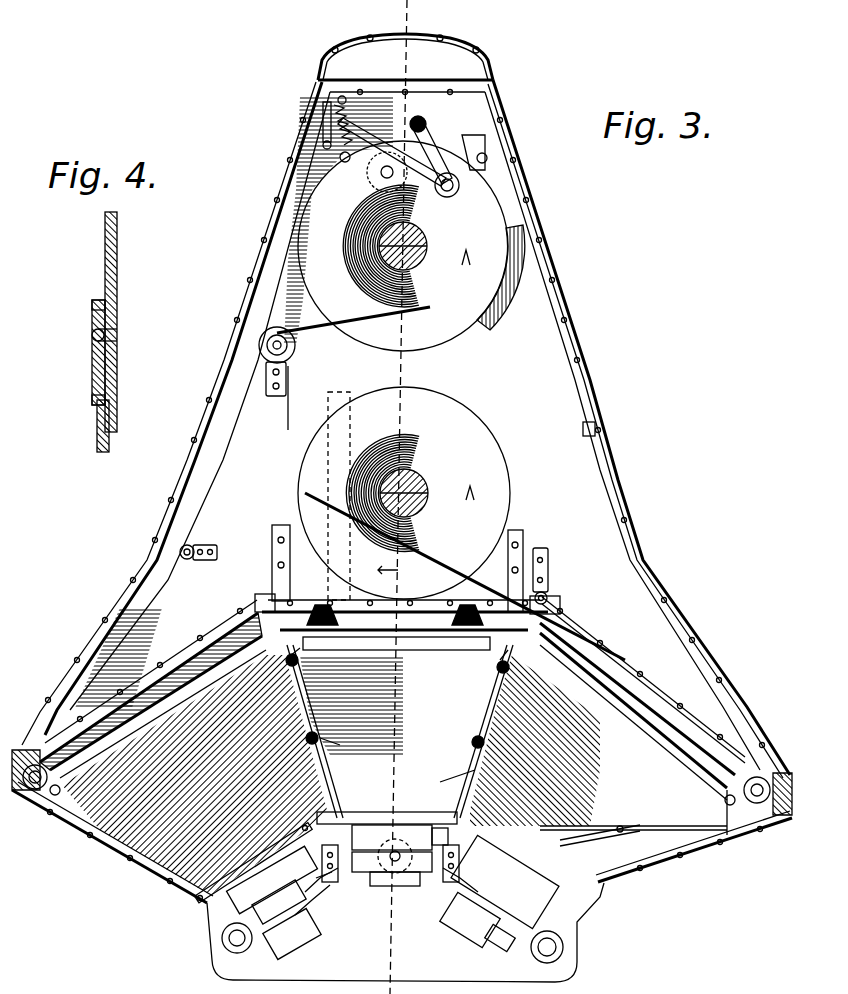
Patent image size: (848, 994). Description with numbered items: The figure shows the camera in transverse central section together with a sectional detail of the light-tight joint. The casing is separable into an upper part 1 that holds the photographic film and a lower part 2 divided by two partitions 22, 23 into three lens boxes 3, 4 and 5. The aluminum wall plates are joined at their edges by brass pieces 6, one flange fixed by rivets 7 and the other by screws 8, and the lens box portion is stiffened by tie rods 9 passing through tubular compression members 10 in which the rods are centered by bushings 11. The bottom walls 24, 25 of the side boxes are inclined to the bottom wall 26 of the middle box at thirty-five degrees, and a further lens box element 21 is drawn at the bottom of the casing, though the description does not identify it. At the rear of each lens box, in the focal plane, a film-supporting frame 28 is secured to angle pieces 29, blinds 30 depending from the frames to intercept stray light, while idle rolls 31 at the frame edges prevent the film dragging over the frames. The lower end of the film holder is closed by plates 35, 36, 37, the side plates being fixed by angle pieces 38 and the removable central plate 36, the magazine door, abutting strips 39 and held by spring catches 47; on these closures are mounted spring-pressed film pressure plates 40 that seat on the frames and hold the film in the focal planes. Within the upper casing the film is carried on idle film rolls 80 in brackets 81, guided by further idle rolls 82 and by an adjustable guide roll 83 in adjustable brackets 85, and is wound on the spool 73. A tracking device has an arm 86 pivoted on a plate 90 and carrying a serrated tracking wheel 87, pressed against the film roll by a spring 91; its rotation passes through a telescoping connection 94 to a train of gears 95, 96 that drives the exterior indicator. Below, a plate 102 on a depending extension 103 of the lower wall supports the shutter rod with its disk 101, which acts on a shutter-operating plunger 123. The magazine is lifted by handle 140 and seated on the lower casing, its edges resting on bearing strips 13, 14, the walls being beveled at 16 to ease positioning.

In FIG. 3, the handle 140 is at (452, 43).
In FIG. 3, the rivets 7 is at (230, 318).
In FIG. 3, the upper part of casing 1 is at (558, 275).
In FIG. 4, the upper part of casing 1 is at (104, 243).
In FIG. 3, the brass pieces 6 is at (222, 452).
In FIG. 3, the screws 8 is at (583, 430).
In FIG. 3, the film spool 73 is at (440, 228).
In FIG. 3, the bushings 11 is at (405, 592).
In FIG. 3, the adjustable guide roll 83 is at (296, 350).
In FIG. 3, the adjustable brackets 85 is at (287, 385).
In FIG. 3, the spring 91 is at (330, 117).
In FIG. 3, the metal plate 90 is at (320, 133).
In FIG. 3, the arm 86 is at (376, 160).
In FIG. 3, the gear 96 is at (380, 190).
In FIG. 3, the gear 95 is at (428, 118).
In FIG. 3, the telescoping connection 94 is at (440, 145).
In FIG. 3, the tracking wheel 87 is at (458, 194).
In FIG. 3, the spring catches 47 is at (282, 525).
In FIG. 3, the brackets 81 is at (218, 548).
In FIG. 3, the idle film rolls 80 is at (190, 544).
In FIG. 3, the angle pieces 38 is at (178, 655).
In FIG. 3, the central plate 36 is at (300, 610).
In FIG. 3, the strips 39 is at (262, 594).
In FIG. 3, the side plate closure 35 is at (128, 695).
In FIG. 3, the film-supporting frame 28 is at (238, 662).
In FIG. 3, the side plate closure 37 is at (680, 705).
In FIG. 3, the angle pieces 29 is at (183, 712).
In FIG. 3, the blinds 30 is at (268, 685).
In FIG. 3, the film pressure plates 40 is at (145, 735).
In FIG. 3, the idle rolls 31 is at (300, 665).
In FIG. 3, the lens box 4 is at (400, 731).
In FIG. 3, the tie rods 9 is at (308, 745).
In FIG. 3, the tubular compression members 10 is at (339, 749).
In FIG. 3, the partition 22 is at (292, 742).
In FIG. 3, the partition 23 is at (447, 776).
In FIG. 3, the bottom wall 24 is at (300, 826).
In FIG. 3, the bottom wall 26 is at (350, 812).
In FIG. 3, the disk 101 is at (395, 890).
In FIG. 3, the plate 102 is at (355, 880).
In FIG. 3, the shutter-operating plunger 123 is at (322, 905).
In FIG. 3, the cylinder 21 is at (499, 893).
In FIG. 3, the bottom wall 25 is at (580, 850).
In FIG. 3, the lens box 3 is at (232, 790).
In FIG. 3, the lens box 5 is at (570, 796).
In FIG. 3, the lower part of casing 2 is at (698, 862).
In FIG. 4, the lower part of casing 2 is at (97, 440).
In FIG. 3, the depending extension 103 is at (565, 955).
In FIG. 3, the idle rolls 82 is at (25, 790).
In FIG. 4, the bearing strip 14 is at (98, 300).
In FIG. 4, the beveled edges 16 is at (92, 304).
In FIG. 4, the bearing strip 13 is at (110, 375).